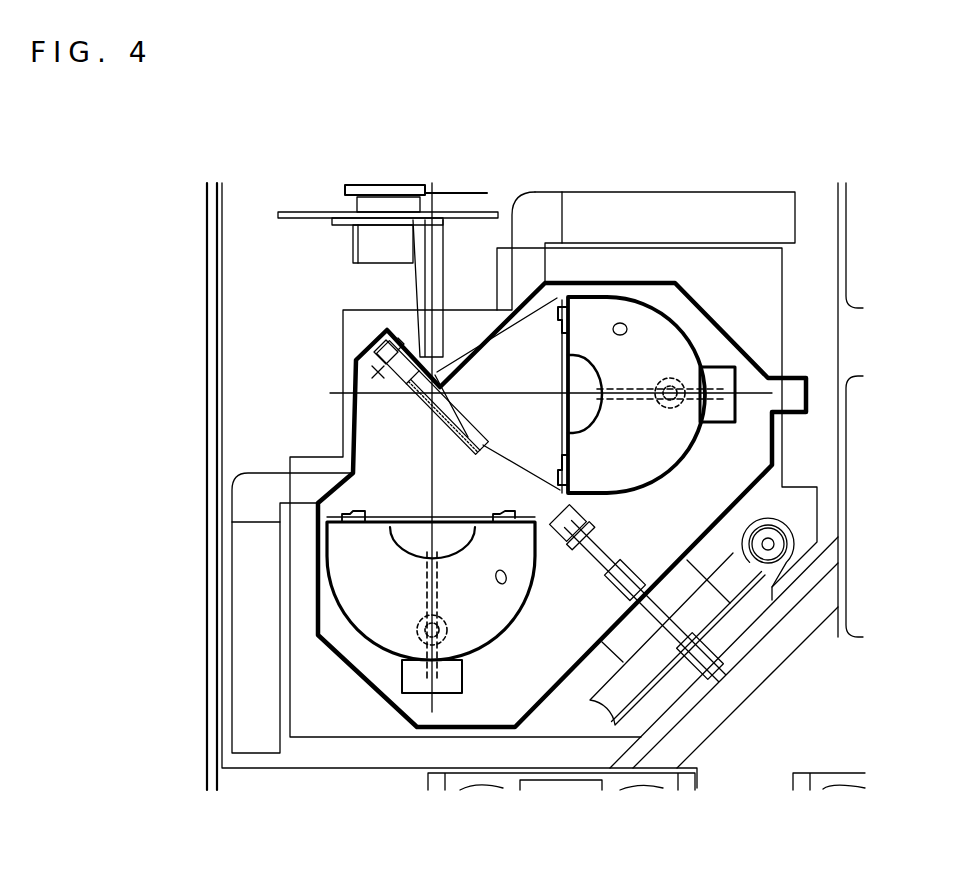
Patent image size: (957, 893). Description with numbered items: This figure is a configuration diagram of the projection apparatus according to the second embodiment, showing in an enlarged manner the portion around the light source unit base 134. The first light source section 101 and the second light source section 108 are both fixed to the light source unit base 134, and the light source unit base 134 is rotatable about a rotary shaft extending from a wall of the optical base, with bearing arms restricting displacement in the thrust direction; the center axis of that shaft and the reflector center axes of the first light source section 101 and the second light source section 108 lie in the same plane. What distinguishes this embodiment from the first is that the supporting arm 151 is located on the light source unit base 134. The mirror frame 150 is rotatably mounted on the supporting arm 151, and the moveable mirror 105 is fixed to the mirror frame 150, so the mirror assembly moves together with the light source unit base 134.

The first light source section 101 is at (693, 356).
The moveable mirror 105 is at (450, 411).
The second light source section 108 is at (362, 597).
The light source unit base 134 is at (733, 472).
The mirror frame 150 is at (395, 373).
The supporting arm 151 is at (368, 367).